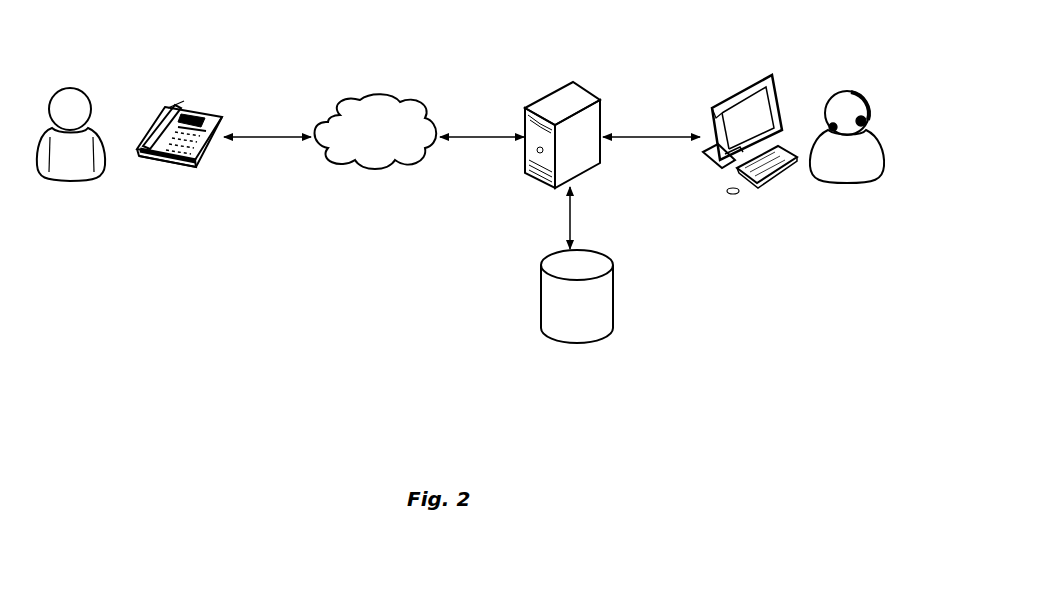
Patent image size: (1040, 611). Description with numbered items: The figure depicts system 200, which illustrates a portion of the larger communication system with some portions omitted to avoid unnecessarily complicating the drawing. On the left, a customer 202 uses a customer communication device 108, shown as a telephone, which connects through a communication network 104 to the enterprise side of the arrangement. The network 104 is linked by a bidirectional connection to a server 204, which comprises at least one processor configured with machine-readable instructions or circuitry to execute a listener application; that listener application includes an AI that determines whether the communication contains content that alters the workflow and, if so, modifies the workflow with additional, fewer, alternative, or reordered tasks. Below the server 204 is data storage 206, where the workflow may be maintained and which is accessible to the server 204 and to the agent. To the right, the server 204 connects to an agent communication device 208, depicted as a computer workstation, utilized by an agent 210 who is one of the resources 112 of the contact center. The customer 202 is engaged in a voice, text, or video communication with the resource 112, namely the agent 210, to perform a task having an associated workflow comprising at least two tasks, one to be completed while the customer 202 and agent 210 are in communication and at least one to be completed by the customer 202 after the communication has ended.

The system 200 is at (898, 36).
The customer 202 is at (101, 125).
The customer communication device 108 is at (203, 113).
The communication network 104 is at (393, 102).
The server 204 is at (583, 93).
The data storage 206 is at (613, 280).
The agent communication device 208 is at (780, 100).
The agent 210 is at (876, 144).
The resource 112 is at (849, 235).